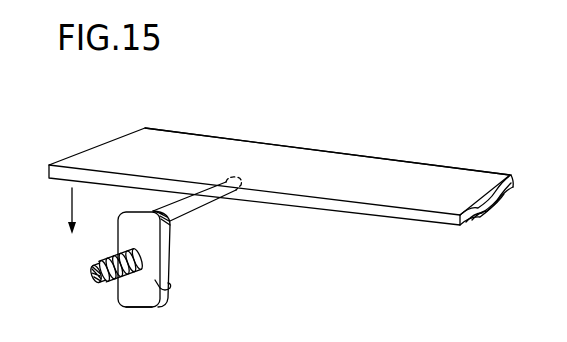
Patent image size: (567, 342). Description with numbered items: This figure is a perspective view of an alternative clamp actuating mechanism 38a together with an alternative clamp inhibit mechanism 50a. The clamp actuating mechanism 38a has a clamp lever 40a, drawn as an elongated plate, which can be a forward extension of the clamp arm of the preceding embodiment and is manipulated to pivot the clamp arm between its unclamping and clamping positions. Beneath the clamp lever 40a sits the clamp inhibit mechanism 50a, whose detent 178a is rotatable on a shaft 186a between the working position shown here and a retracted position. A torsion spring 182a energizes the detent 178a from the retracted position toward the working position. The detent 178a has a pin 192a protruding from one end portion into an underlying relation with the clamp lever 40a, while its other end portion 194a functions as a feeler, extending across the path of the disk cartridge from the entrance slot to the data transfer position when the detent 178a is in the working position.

The clamp actuating mechanism 38a is at (382, 132).
The clamp lever 40a is at (176, 135).
The clamp inhibit mechanism 50a is at (100, 240).
The detent 178a is at (178, 229).
The pin 192a is at (198, 198).
The torsion spring 182a is at (155, 281).
The shaft 186a is at (92, 277).
The other end portion 194a is at (148, 308).